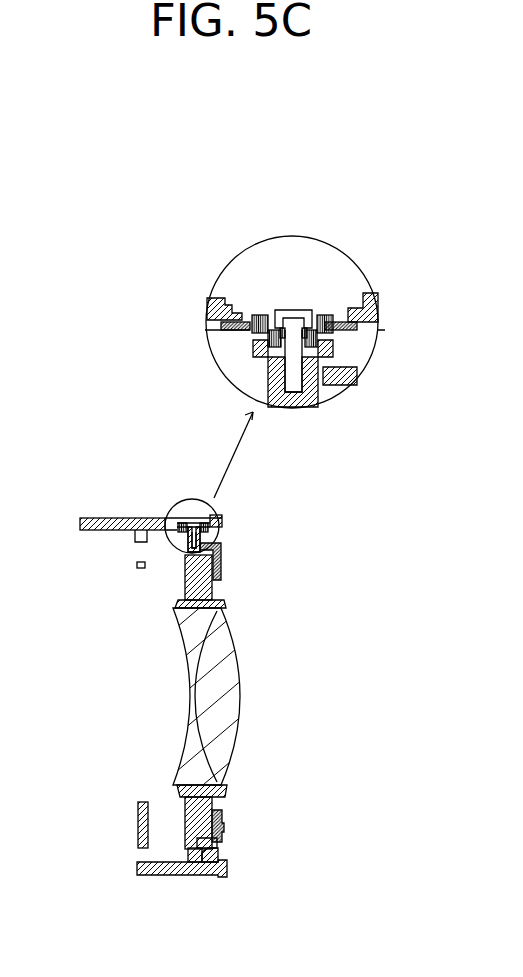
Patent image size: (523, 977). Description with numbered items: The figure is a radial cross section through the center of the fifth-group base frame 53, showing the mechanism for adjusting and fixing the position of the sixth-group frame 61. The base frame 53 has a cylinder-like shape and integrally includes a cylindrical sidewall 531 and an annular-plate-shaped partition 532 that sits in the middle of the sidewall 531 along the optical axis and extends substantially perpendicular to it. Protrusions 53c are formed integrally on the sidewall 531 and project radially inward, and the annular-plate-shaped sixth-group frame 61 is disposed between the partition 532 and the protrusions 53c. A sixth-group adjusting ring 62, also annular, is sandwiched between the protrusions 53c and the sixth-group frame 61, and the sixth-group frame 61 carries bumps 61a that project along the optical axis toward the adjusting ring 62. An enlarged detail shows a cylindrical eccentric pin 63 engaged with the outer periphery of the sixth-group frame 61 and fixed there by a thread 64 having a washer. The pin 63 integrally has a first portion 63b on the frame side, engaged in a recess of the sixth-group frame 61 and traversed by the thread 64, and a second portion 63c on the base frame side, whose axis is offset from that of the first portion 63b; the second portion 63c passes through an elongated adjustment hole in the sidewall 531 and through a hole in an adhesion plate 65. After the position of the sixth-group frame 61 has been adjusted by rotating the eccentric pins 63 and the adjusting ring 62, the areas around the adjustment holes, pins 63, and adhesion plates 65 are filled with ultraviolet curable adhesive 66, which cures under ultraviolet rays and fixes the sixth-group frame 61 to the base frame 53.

The fifth-group base frame 53 is at (372, 312).
The protrusion 53c is at (220, 855).
The cylindrical sidewall 531 is at (163, 875).
The partition 532 is at (143, 801).
The sixth-group frame 61 is at (268, 378).
The bump 61a is at (187, 874).
The sixth-group adjusting ring 62 is at (220, 839).
The eccentric pin 63 is at (221, 326).
The first portion 63b is at (253, 357).
The second portion 63c is at (252, 333).
The thread 64 is at (295, 357).
The adhesion plate 65 is at (355, 332).
The ultraviolet curable adhesive 66 is at (247, 313).